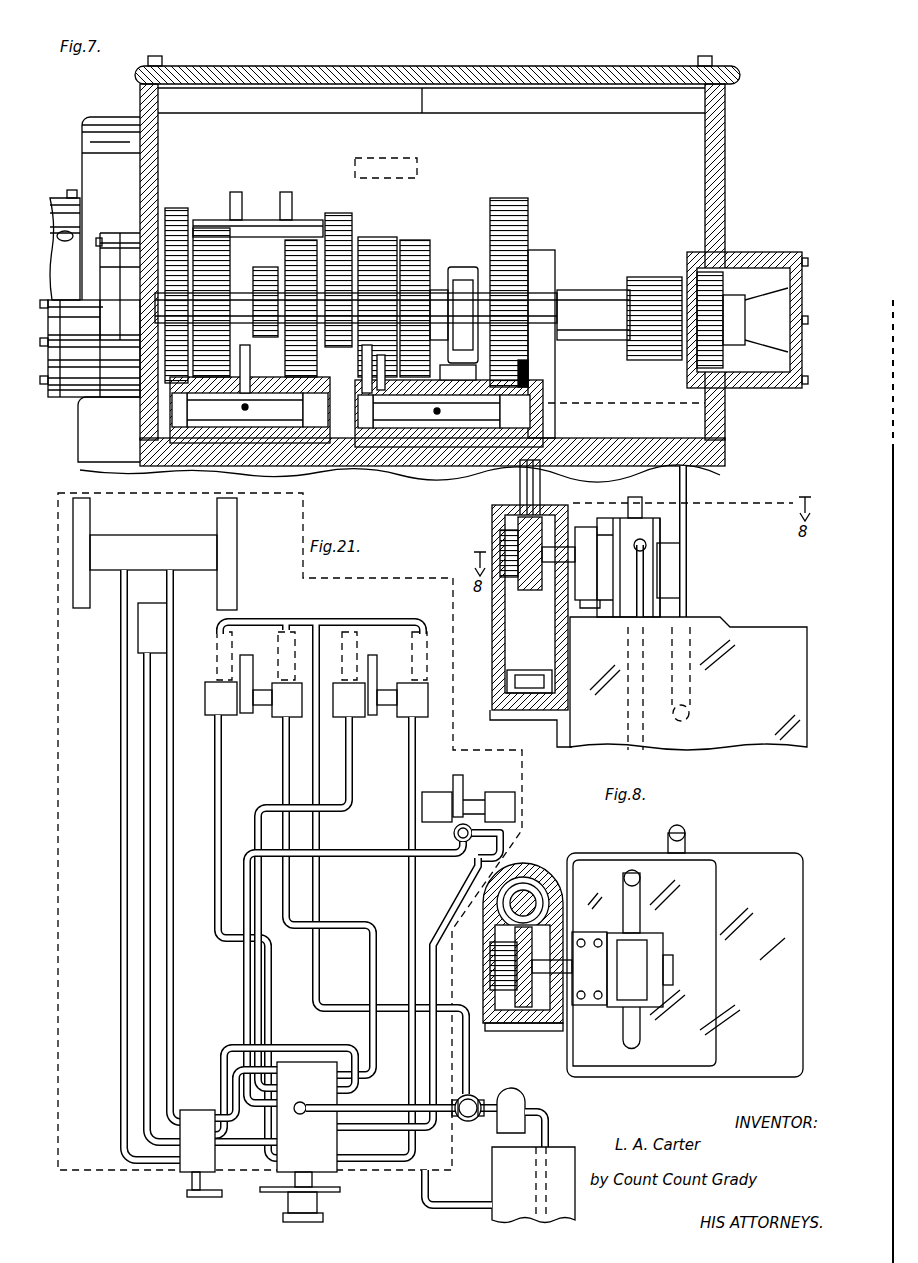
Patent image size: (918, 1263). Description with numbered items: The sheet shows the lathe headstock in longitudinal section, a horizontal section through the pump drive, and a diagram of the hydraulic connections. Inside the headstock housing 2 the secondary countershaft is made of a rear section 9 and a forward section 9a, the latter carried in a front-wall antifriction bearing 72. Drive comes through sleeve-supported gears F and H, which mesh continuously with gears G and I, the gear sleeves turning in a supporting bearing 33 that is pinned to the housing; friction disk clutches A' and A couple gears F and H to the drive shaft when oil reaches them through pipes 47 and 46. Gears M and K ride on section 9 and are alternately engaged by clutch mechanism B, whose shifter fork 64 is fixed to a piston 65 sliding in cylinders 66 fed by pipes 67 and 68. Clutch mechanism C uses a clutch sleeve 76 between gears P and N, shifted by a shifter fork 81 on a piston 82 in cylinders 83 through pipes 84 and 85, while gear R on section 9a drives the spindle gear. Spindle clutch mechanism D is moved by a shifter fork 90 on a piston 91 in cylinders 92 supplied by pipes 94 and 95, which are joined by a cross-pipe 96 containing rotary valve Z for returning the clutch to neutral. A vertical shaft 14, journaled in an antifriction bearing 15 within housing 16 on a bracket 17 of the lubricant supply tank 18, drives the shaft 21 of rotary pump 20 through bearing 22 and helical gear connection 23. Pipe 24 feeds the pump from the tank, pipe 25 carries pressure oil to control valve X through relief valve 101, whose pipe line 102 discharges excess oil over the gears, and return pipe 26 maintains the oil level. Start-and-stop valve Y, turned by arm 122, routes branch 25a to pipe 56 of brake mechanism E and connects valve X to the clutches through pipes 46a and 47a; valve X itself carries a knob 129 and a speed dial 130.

In FIG. 7, the headstock housing 2 is at (725, 196).
In FIG. 21, the headstock housing 2 is at (403, 585).
In FIG. 7, the secondary countershaft rear section 9 is at (162, 305).
In FIG. 7, the secondary countershaft forward section 9a is at (580, 300).
In FIG. 7, the vertical shaft 14 is at (540, 490).
In FIG. 8, the vertical shaft 14 is at (535, 896).
In FIG. 7, the antifriction bearing 15 is at (510, 680).
In FIG. 7, the housing 16 is at (496, 625).
In FIG. 8, the housing 16 is at (560, 893).
In FIG. 7, the bracket 17 is at (537, 722).
In FIG. 8, the bracket 17 is at (505, 1032).
In FIG. 7, the lubricant supply tank 18 is at (760, 640).
In FIG. 8, the lubricant supply tank 18 is at (760, 866).
In FIG. 21, the lubricant supply tank 18 is at (505, 1177).
In FIG. 7, the rotary pump 20 is at (645, 545).
In FIG. 8, the rotary pump 20 is at (640, 970).
In FIG. 21, the rotary pump 20 is at (515, 1097).
In FIG. 7, the pump shaft 21 is at (572, 558).
In FIG. 8, the pump shaft 21 is at (570, 960).
In FIG. 7, the antifriction bearing 22 is at (508, 578).
In FIG. 8, the antifriction bearing 22 is at (500, 970).
In FIG. 7, the helical gear connection 23 is at (527, 597).
In FIG. 8, the helical gear connection 23 is at (530, 932).
In FIG. 7, the pipe 24 is at (648, 590).
In FIG. 8, the pipe 24 is at (645, 1035).
In FIG. 21, the pipe 24 is at (548, 1133).
In FIG. 7, the pipe 25 is at (670, 507).
In FIG. 8, the pipe 25 is at (640, 900).
In FIG. 21, the pipe 25 is at (418, 1106).
In FIG. 21, the branch pipe 25a is at (290, 1145).
In FIG. 7, the return pipe 26 is at (692, 554).
In FIG. 8, the return pipe 26 is at (688, 834).
In FIG. 21, the return pipe 26 is at (455, 1207).
In FIG. 7, the supporting bearing 33 is at (257, 222).
In FIG. 7, the pipe 46 is at (238, 190).
In FIG. 21, the pipe 46 is at (120, 636).
In FIG. 21, the pipe 46a is at (232, 1075).
In FIG. 7, the pipe 47 is at (287, 190).
In FIG. 21, the pipe 47 is at (176, 632).
In FIG. 21, the pipe 47a is at (310, 1048).
In FIG. 21, the pipe 56 is at (143, 800).
In FIG. 7, the shifter fork 64 is at (248, 340).
In FIG. 21, the shifter fork 64 is at (247, 670).
In FIG. 7, the piston 65 is at (262, 440).
In FIG. 21, the piston 65 is at (263, 718).
In FIG. 7, the cylinders 66 is at (200, 443).
In FIG. 21, the cylinders 66 is at (210, 703).
In FIG. 7, the pipe 67 is at (356, 338).
In FIG. 21, the pipe 67 is at (283, 785).
In FIG. 7, the pipe 68 is at (185, 378).
In FIG. 21, the pipe 68 is at (213, 795).
In FIG. 7, the antifriction bearing 72 is at (712, 368).
In FIG. 7, the clutch sleeve 76 is at (444, 292).
In FIG. 7, the shifter fork 81 is at (440, 377).
In FIG. 21, the shifter fork 81 is at (378, 682).
In FIG. 7, the piston 82 is at (462, 440).
In FIG. 21, the piston 82 is at (390, 712).
In FIG. 7, the cylinders 83 is at (388, 448).
In FIG. 21, the cylinders 83 is at (380, 700).
In FIG. 7, the pipe 84 is at (372, 365).
In FIG. 21, the pipe 84 is at (351, 766).
In FIG. 7, the pipe 85 is at (530, 380).
In FIG. 21, the pipe 85 is at (408, 806).
In FIG. 21, the shifter fork 90 is at (455, 785).
In FIG. 21, the piston 91 is at (480, 796).
In FIG. 21, the cylinders 92 is at (468, 807).
In FIG. 21, the pipe 94 is at (448, 858).
In FIG. 21, the pipe 95 is at (460, 907).
In FIG. 21, the cross-pipe 96 is at (496, 856).
In FIG. 21, the relief valve 101 is at (467, 1122).
In FIG. 21, the pipe line 102 is at (320, 622).
In FIG. 21, the arm 122 is at (205, 1200).
In FIG. 21, the knob 129 is at (323, 1218).
In FIG. 21, the dial 130 is at (318, 1192).
In FIG. 7, the friction disk clutch A is at (180, 168).
In FIG. 21, the friction disk clutch A is at (145, 553).
In FIG. 7, the friction disk clutch A' is at (386, 157).
In FIG. 21, the friction disk clutch A' is at (241, 554).
In FIG. 7, the fluid operated clutch mechanism B is at (258, 275).
In FIG. 21, the fluid operated clutch mechanism B is at (258, 718).
In FIG. 7, the fluid operated clutch mechanism C is at (461, 305).
In FIG. 21, the fluid operated clutch mechanism C is at (386, 712).
In FIG. 21, the fluid operated clutch mechanism D is at (471, 784).
In FIG. 21, the fluid operated brake mechanism E is at (153, 628).
In FIG. 7, the gear F is at (333, 210).
In FIG. 7, the gear G is at (372, 250).
In FIG. 7, the gear H is at (178, 205).
In FIG. 7, the gear I is at (176, 254).
In FIG. 7, the gear K is at (298, 240).
In FIG. 21, the gear K is at (278, 643).
In FIG. 7, the gear M is at (213, 235).
In FIG. 21, the gear M is at (217, 646).
In FIG. 7, the gear N is at (526, 225).
In FIG. 21, the gear N is at (427, 650).
In FIG. 7, the gear P is at (430, 268).
In FIG. 21, the gear P is at (357, 650).
In FIG. 7, the gear R is at (650, 276).
In FIG. 21, the rotary control valve X is at (307, 1117).
In FIG. 21, the start-and-stop valve Y is at (197, 1141).
In FIG. 21, the rotary valve Z is at (460, 843).